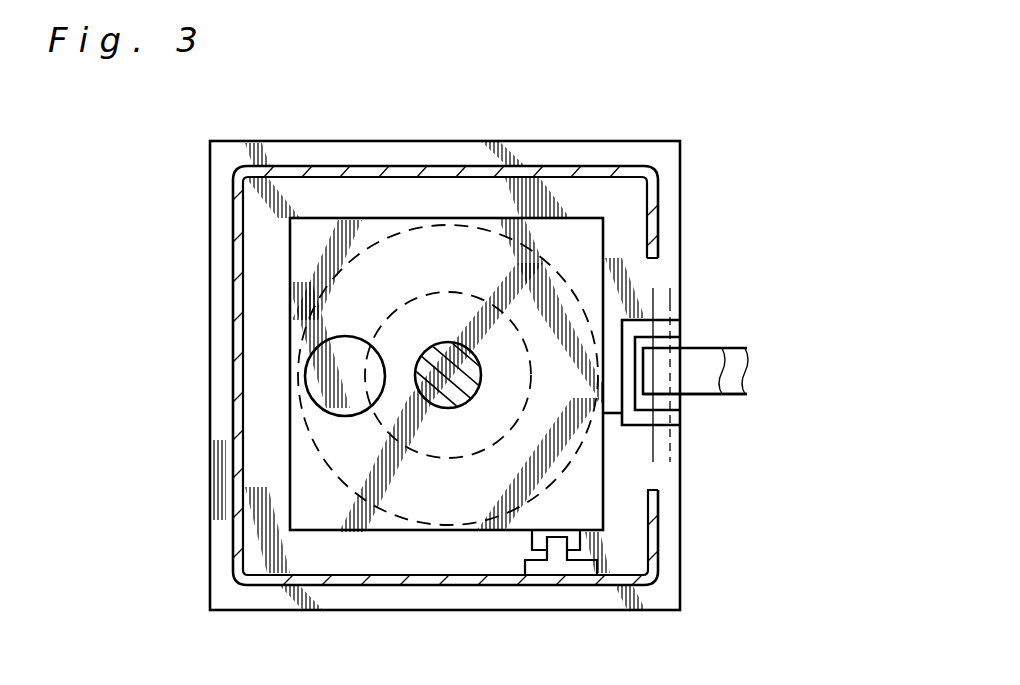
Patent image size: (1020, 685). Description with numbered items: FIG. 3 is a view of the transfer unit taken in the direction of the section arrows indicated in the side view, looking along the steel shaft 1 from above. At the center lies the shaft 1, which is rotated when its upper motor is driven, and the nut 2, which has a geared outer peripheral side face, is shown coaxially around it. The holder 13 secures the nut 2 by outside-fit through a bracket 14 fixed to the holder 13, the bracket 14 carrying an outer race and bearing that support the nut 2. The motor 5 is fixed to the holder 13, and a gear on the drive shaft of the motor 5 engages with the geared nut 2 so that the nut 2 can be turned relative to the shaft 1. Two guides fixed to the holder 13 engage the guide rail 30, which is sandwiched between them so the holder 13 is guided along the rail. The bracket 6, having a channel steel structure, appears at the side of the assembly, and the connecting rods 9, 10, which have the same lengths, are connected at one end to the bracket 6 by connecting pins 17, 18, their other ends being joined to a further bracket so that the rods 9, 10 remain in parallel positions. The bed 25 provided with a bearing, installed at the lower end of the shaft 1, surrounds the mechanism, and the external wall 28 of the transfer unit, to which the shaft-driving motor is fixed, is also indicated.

The steel shaft 1 is at (465, 370).
The nut 2 is at (390, 435).
The motor with servo mechanism 5 is at (318, 383).
The bracket having channel steel structure 6 is at (677, 420).
The connecting rod 9 is at (736, 373).
The connecting rod 10 is at (708, 386).
The holder 13 is at (303, 253).
The bracket 14 is at (572, 284).
The connecting pin 17 is at (655, 290).
The connecting pin 18 is at (672, 296).
The bed 25 is at (220, 298).
The external wall 28 is at (240, 375).
The guide rail 30 is at (578, 567).